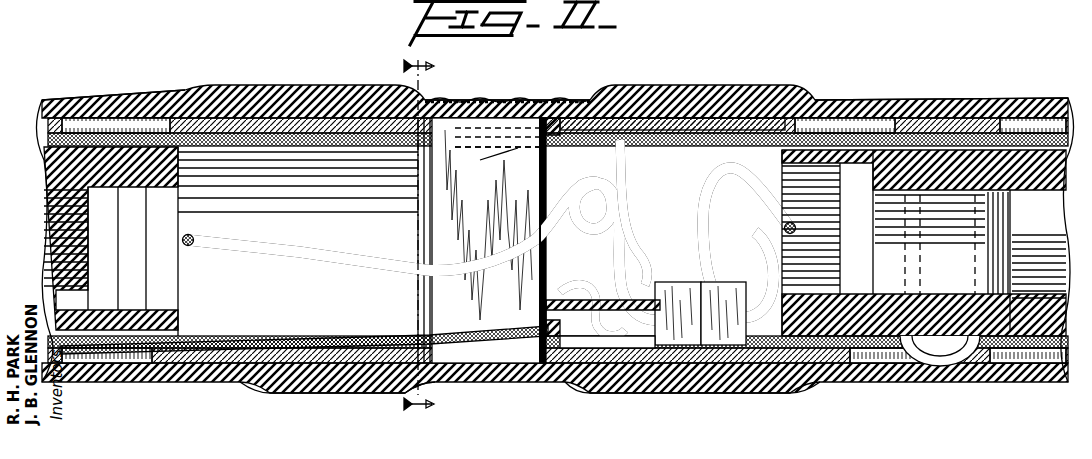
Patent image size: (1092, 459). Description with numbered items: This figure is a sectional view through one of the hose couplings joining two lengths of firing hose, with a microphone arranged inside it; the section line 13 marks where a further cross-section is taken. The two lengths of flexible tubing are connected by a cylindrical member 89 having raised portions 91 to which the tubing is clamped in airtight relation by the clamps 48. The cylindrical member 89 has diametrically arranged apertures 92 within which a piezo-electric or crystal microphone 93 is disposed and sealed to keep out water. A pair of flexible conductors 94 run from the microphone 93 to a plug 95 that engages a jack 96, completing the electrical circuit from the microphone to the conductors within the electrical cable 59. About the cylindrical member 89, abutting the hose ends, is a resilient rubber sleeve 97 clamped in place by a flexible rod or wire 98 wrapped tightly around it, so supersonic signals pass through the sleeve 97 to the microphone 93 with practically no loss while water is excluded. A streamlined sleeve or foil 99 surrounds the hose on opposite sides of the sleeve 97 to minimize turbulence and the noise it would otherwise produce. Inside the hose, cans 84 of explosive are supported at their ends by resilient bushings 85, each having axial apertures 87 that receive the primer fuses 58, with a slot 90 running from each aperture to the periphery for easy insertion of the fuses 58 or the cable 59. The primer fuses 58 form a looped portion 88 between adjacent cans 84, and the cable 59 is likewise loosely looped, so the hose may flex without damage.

The section line 13- 13 is at (403, 239).
The clamps 48 is at (326, 92).
The primer fuses 58 is at (970, 392).
The electrical cable 59 is at (335, 256).
The cans 84 is at (1034, 260).
The resilient bushings 85 is at (42, 130).
The apertures 87 is at (128, 118).
The looped portion 88 is at (932, 380).
The cylindrical member 89 is at (795, 118).
The slot 90 is at (90, 118).
The raised portions 91 is at (186, 92).
The apertures 92 is at (538, 100).
The microphone 93 is at (482, 240).
The flexible conductors 94 is at (590, 238).
The plug 95 is at (678, 283).
The jack 96 is at (708, 283).
The resilient sleeve 97 is at (506, 98).
The flexible rod or wire 98 is at (476, 98).
The streamlined sleeve or foil 99 is at (280, 393).